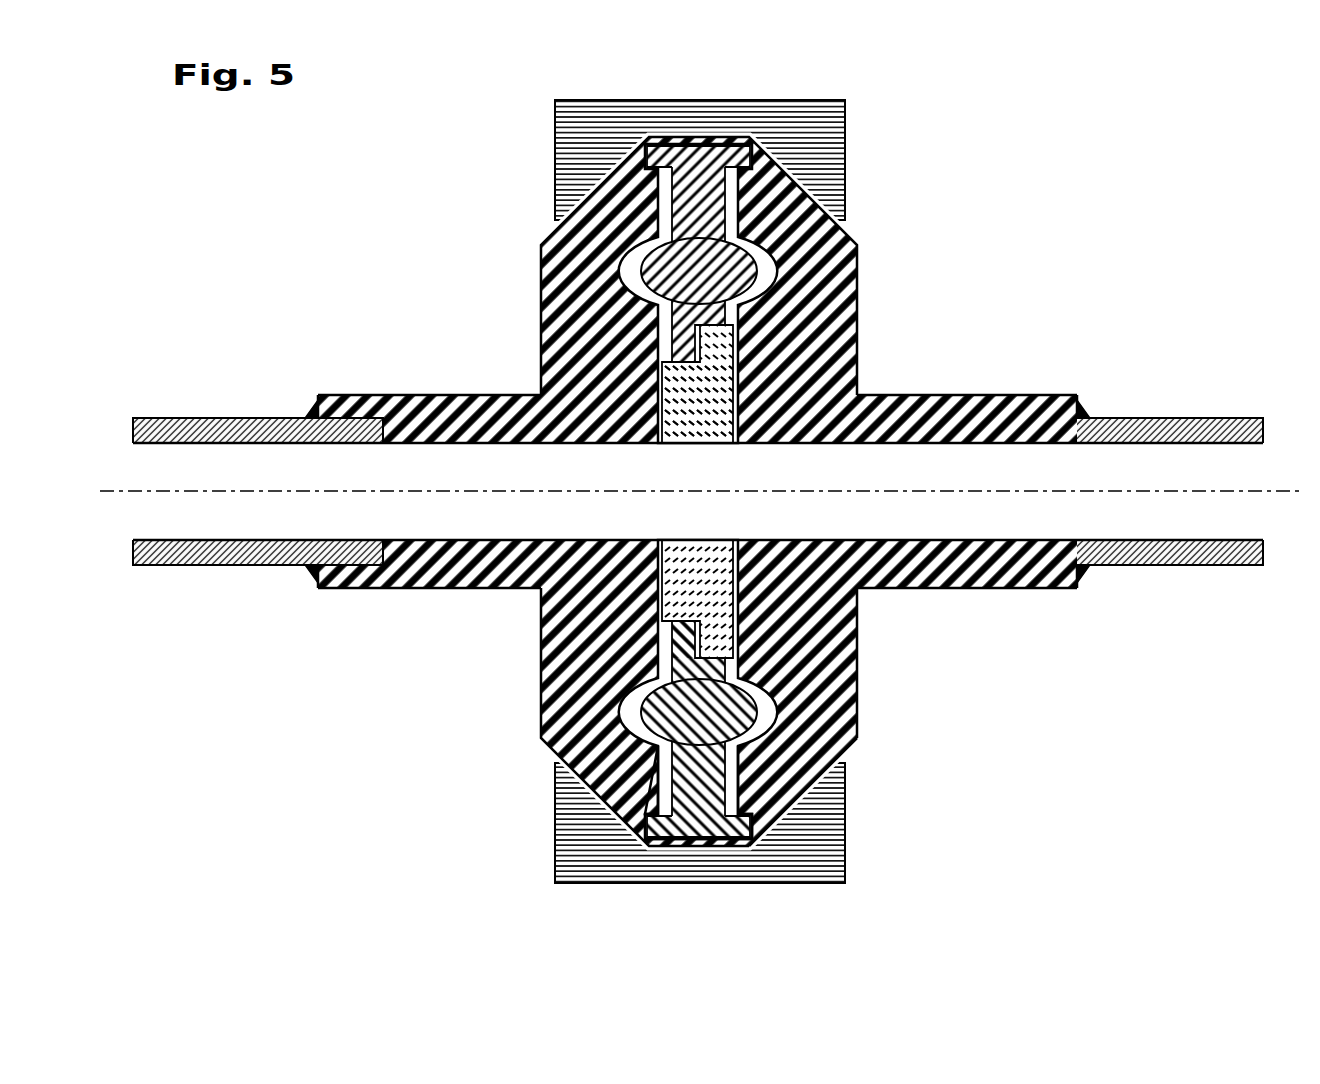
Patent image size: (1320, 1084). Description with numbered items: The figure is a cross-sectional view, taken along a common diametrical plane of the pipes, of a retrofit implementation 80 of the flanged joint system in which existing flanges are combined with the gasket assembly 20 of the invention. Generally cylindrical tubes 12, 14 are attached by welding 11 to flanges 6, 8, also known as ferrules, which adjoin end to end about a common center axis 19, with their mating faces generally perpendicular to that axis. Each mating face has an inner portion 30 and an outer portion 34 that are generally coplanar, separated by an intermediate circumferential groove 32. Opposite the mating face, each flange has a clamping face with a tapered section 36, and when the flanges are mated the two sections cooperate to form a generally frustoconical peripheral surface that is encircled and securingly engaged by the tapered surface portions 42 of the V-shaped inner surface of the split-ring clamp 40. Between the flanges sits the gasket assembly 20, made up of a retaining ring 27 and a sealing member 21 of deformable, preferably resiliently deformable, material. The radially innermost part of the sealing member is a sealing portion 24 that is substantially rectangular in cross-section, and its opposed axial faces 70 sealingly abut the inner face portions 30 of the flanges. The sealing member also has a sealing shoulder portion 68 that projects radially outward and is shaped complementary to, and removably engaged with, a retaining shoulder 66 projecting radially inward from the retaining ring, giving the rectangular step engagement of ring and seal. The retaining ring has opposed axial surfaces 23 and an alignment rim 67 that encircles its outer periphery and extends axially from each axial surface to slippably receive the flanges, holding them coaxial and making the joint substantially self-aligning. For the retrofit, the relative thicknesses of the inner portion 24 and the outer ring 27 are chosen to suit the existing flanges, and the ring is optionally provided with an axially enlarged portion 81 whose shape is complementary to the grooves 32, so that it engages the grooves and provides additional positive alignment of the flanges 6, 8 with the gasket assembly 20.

The flange 6 is at (390, 594).
The flange 8 is at (966, 594).
The welding 11 is at (308, 405).
The cylindrical tube 12 is at (225, 417).
The cylindrical tube 14 is at (1170, 417).
The center axis 19 is at (1273, 491).
The gasket assembly 20 is at (738, 657).
The sealing member 21 is at (688, 445).
The axial surfaces 23 is at (672, 205).
The sealing portion 24 is at (697, 388).
The retaining ring 27 is at (670, 833).
The inner portion 30 is at (668, 630).
The circumferential groove 32 is at (632, 708).
The outer portion 34 is at (668, 765).
The tapered section 36 is at (850, 750).
The clamp 40 is at (852, 872).
The tapered surface portions 42 is at (595, 800).
The retaining shoulder 66 is at (683, 643).
The alignment rim 67 is at (738, 840).
The sealing shoulder portion 68 is at (733, 343).
The axial faces 70 is at (738, 415).
The implementation 80 is at (990, 240).
The axially enlarged portion 81 is at (760, 270).